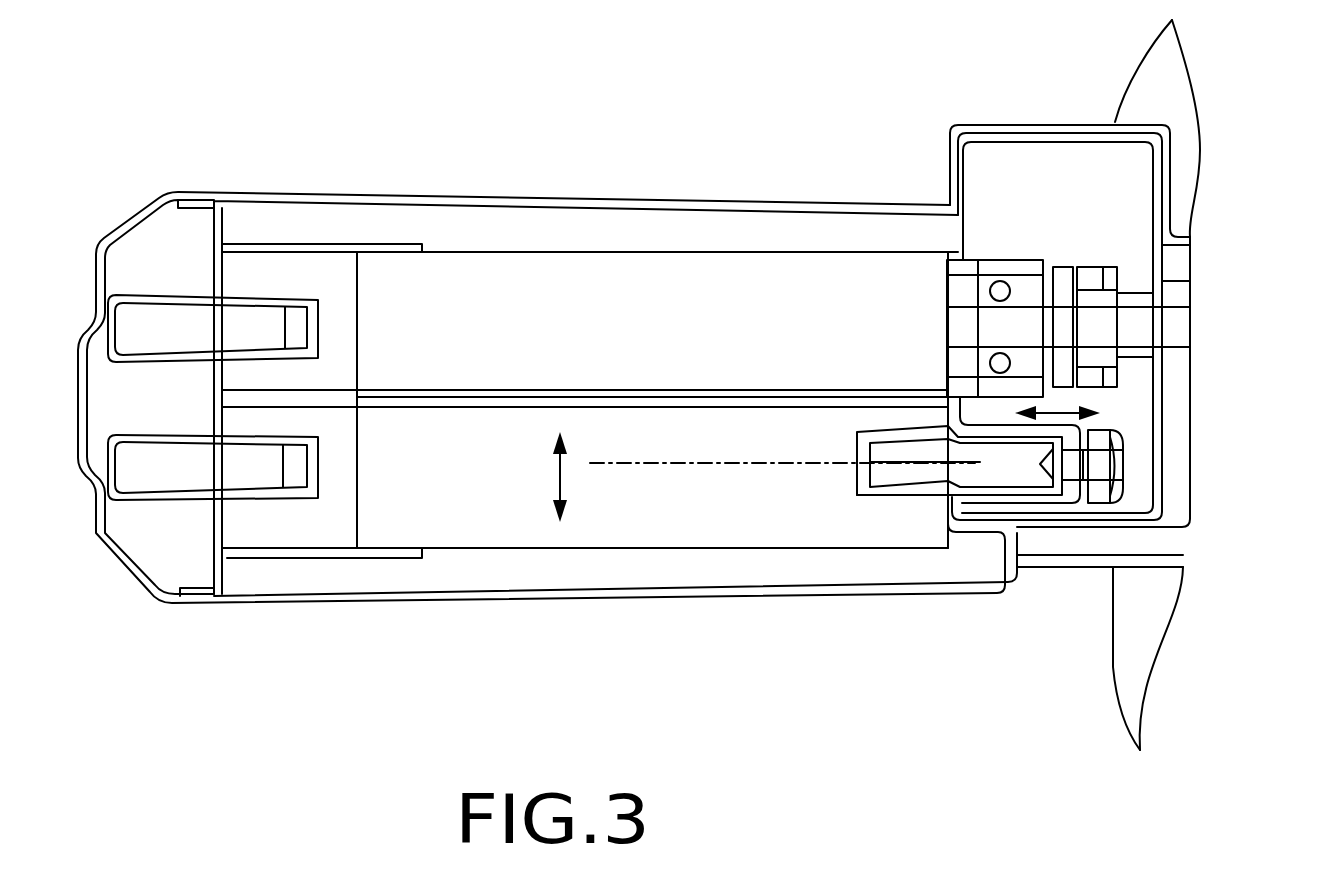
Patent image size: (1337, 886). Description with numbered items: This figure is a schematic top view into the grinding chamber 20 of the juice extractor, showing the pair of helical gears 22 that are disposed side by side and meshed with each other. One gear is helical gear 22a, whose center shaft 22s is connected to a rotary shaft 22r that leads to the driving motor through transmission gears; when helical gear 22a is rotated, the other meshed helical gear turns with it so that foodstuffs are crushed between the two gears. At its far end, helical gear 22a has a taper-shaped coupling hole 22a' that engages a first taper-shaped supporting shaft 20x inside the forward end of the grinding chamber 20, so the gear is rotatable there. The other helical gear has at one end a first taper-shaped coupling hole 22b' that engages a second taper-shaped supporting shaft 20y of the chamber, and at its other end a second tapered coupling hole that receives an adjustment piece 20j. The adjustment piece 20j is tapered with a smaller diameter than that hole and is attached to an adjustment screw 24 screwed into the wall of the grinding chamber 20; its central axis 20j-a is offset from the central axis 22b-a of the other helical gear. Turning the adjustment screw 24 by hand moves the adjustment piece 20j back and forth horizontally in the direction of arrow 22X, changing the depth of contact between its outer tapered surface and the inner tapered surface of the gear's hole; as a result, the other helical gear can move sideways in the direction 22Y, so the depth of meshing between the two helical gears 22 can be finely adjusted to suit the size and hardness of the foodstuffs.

The grinding chamber 20 is at (1088, 562).
The first taper-shaped supporting shaft 20x is at (157, 323).
The second taper-shaped supporting shaft 20y is at (142, 475).
The adjustment piece 20j is at (1000, 453).
The central axis of the adjustment piece 20j-a is at (800, 455).
The helical gears 22 is at (462, 520).
The helical gear 22a is at (586, 357).
The taper-shaped coupling hole 22a' is at (324, 239).
The first taper-shaped coupling hole 22b' is at (296, 575).
The central axis of the helical gear 22b-a is at (722, 465).
The center shaft 22s is at (1027, 330).
The rotary shaft 22r is at (1177, 327).
The arrow 22X is at (1060, 412).
The direction 22Y is at (560, 478).
The adjustment screw 24 is at (1100, 470).